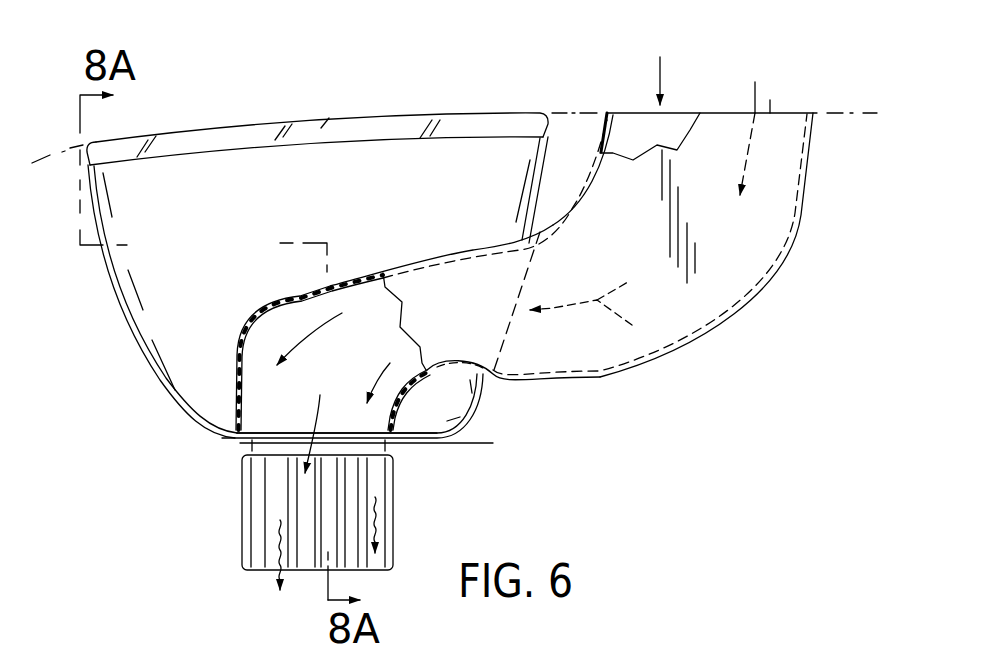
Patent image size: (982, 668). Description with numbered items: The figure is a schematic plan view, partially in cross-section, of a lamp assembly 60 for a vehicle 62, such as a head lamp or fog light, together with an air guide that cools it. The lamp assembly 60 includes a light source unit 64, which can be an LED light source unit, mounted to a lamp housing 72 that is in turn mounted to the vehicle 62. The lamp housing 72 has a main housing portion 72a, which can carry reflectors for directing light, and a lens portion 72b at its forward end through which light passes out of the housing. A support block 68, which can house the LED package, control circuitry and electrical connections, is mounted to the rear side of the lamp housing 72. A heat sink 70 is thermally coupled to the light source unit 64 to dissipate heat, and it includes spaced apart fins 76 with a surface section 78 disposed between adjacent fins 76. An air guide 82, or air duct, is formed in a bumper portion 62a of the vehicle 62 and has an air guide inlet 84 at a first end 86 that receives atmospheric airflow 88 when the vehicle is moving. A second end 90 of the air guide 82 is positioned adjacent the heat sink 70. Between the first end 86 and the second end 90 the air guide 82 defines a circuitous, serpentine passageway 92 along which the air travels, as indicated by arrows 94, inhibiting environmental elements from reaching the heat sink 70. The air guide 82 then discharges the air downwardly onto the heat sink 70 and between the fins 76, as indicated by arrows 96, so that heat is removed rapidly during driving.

The lamp assembly 60 is at (456, 326).
The vehicle 62 is at (573, 110).
The bumper portion 62a is at (835, 112).
The light source unit 64 is at (380, 447).
The support block 68 is at (247, 448).
The heat sink 70 is at (323, 528).
The lamp housing 72 is at (312, 244).
The main housing portion 72a is at (123, 310).
The lens portion 72b is at (320, 128).
The spaced apart fins 76 is at (265, 507).
The surface section 78 is at (353, 485).
The air guide 82 is at (630, 228).
The air guide inlet 84 is at (677, 122).
The first end 86 is at (770, 112).
The airflow 88 is at (662, 63).
The second end 90 is at (253, 442).
The passageway 92 is at (370, 290).
The arrows indicating airflow direction 94 is at (302, 332).
The arrows indicating discharge airflow 96 is at (320, 395).